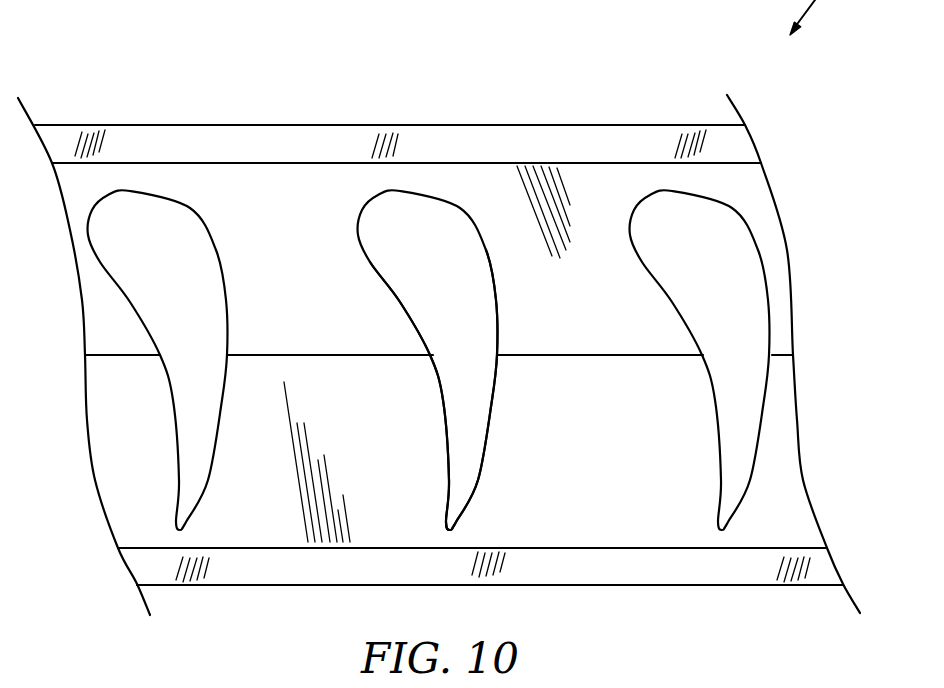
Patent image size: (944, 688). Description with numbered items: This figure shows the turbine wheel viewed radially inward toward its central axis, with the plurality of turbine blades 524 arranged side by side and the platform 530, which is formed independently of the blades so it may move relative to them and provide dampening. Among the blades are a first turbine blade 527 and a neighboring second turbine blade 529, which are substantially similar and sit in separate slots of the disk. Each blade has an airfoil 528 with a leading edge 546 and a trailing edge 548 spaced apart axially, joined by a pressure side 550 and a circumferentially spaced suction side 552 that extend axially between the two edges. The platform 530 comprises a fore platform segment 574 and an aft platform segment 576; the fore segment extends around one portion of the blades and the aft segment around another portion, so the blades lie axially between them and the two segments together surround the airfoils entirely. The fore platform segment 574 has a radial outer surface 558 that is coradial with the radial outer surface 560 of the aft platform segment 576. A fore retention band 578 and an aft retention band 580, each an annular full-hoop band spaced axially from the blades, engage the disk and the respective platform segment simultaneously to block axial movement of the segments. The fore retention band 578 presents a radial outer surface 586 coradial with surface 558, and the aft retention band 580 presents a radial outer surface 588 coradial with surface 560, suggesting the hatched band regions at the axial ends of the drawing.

The turbine blades 524 is at (186, 190).
The first turbine blade 527 is at (401, 172).
The airfoil 528 is at (496, 405).
The second turbine blade 529 is at (675, 170).
The platform 530 is at (465, 182).
The leading edge 546 is at (373, 197).
The trailing edge 548 is at (451, 532).
The pressure side 550 is at (397, 297).
The suction side 552 is at (497, 303).
The radial outer surface 558 is at (247, 197).
The radial outer surface 560 is at (253, 512).
The fore platform segment 574 is at (590, 208).
The aft platform segment 576 is at (670, 512).
The fore retention band 578 is at (110, 141).
The aft retention band 580 is at (626, 598).
The radial outer surface 586 is at (135, 140).
The radial outer surface 588 is at (318, 570).